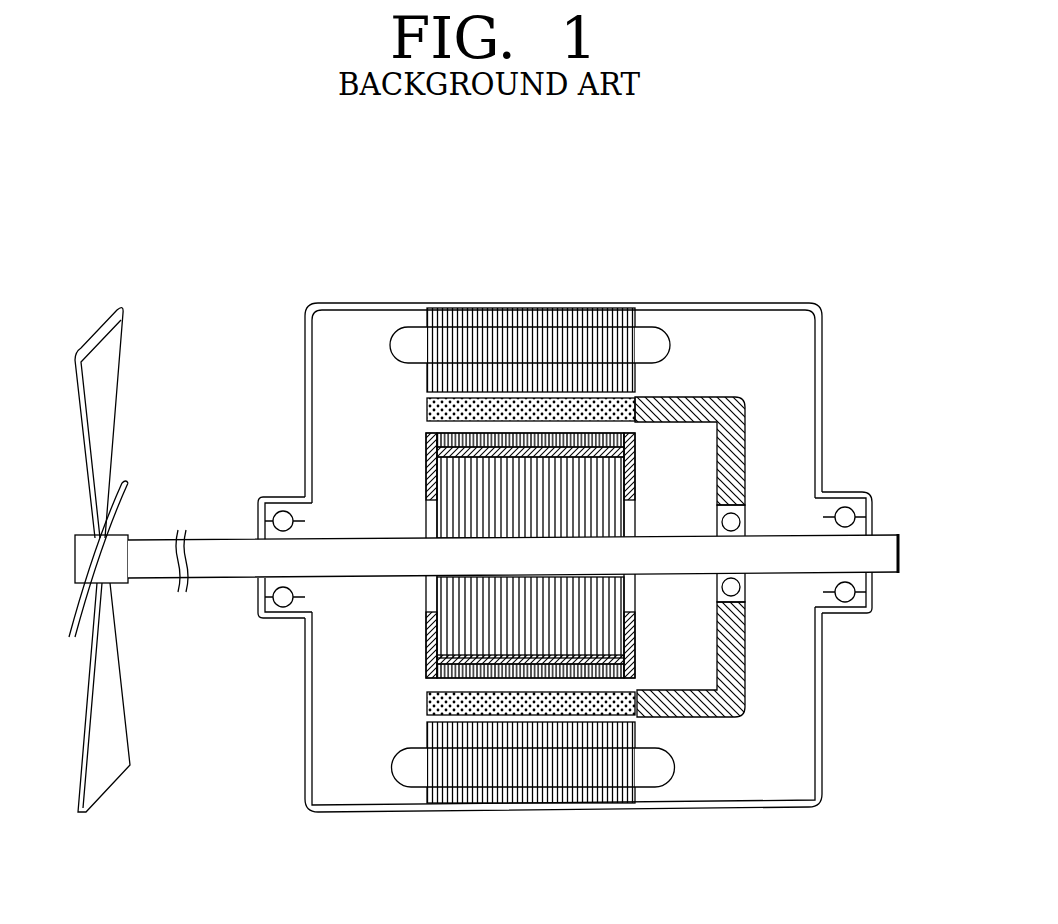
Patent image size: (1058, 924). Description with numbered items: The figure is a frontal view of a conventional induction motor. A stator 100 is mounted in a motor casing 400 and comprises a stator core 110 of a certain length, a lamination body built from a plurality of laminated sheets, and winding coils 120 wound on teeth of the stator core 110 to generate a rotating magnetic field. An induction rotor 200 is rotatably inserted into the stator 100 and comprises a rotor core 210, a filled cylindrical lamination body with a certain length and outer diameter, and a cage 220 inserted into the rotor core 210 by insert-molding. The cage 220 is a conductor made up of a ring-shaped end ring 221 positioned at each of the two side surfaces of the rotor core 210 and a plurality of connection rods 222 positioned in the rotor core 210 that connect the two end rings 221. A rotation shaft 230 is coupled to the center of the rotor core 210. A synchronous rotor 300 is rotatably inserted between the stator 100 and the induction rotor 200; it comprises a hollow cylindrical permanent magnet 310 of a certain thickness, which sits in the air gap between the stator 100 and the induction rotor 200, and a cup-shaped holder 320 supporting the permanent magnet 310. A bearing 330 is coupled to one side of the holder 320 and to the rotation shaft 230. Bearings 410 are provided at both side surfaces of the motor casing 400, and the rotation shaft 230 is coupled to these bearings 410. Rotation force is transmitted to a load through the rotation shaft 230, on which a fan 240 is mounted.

The stator 100 is at (508, 500).
The stator core 110 is at (419, 318).
The winding coils 120 is at (440, 248).
The induction rotor 200 is at (533, 649).
The rotor core 210 is at (427, 602).
The cage 220 is at (410, 660).
The end ring 221 is at (430, 668).
The connection rods 222 is at (479, 666).
The rotation shaft 230 is at (900, 552).
The fan 240 is at (102, 340).
The synchronous rotor 300 is at (676, 451).
The permanent magnet 310 is at (622, 397).
The holder 320 is at (723, 393).
The bearing 330 is at (745, 492).
The motor casing 400 is at (538, 305).
The bearings 410 is at (278, 497).